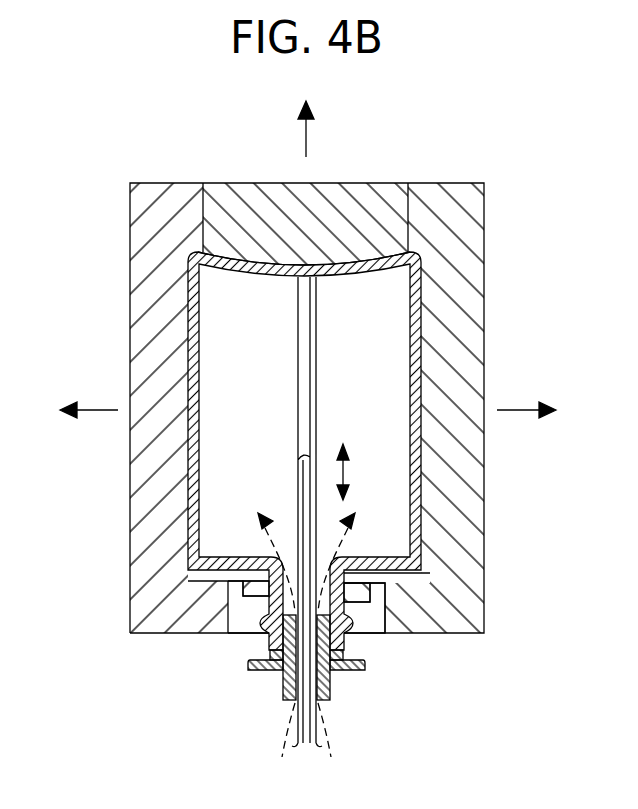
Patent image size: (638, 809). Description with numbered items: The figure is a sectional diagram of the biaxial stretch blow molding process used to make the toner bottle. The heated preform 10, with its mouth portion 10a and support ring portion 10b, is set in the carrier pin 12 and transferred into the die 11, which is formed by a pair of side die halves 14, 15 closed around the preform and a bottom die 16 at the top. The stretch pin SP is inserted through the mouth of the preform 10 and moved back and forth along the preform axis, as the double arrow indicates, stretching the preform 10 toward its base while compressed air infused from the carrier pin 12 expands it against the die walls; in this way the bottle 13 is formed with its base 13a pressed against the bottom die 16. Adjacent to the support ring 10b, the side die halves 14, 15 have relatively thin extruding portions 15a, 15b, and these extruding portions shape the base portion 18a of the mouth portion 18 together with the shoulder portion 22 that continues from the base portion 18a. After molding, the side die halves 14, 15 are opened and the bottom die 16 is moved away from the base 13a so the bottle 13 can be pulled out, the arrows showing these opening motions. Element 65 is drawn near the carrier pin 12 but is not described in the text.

The preform 10 is at (369, 476).
The mouth portion 10a is at (346, 638).
The support ring portion 10b is at (246, 598).
The die 11 is at (319, 388).
The carrier pin 12 is at (334, 690).
The bottle 13 is at (422, 290).
The base 13a is at (351, 259).
The side die half 14 is at (130, 468).
The side die half 15 is at (484, 360).
The extruding portion 15a is at (345, 575).
The extruding portion 15b is at (266, 577).
The bottom die 16 is at (368, 184).
The mouth portion 18 is at (249, 663).
The base portion 18a is at (373, 590).
The shoulder portion 22 is at (248, 556).
The washer 65 is at (363, 657).
The stretch pin SP is at (317, 366).